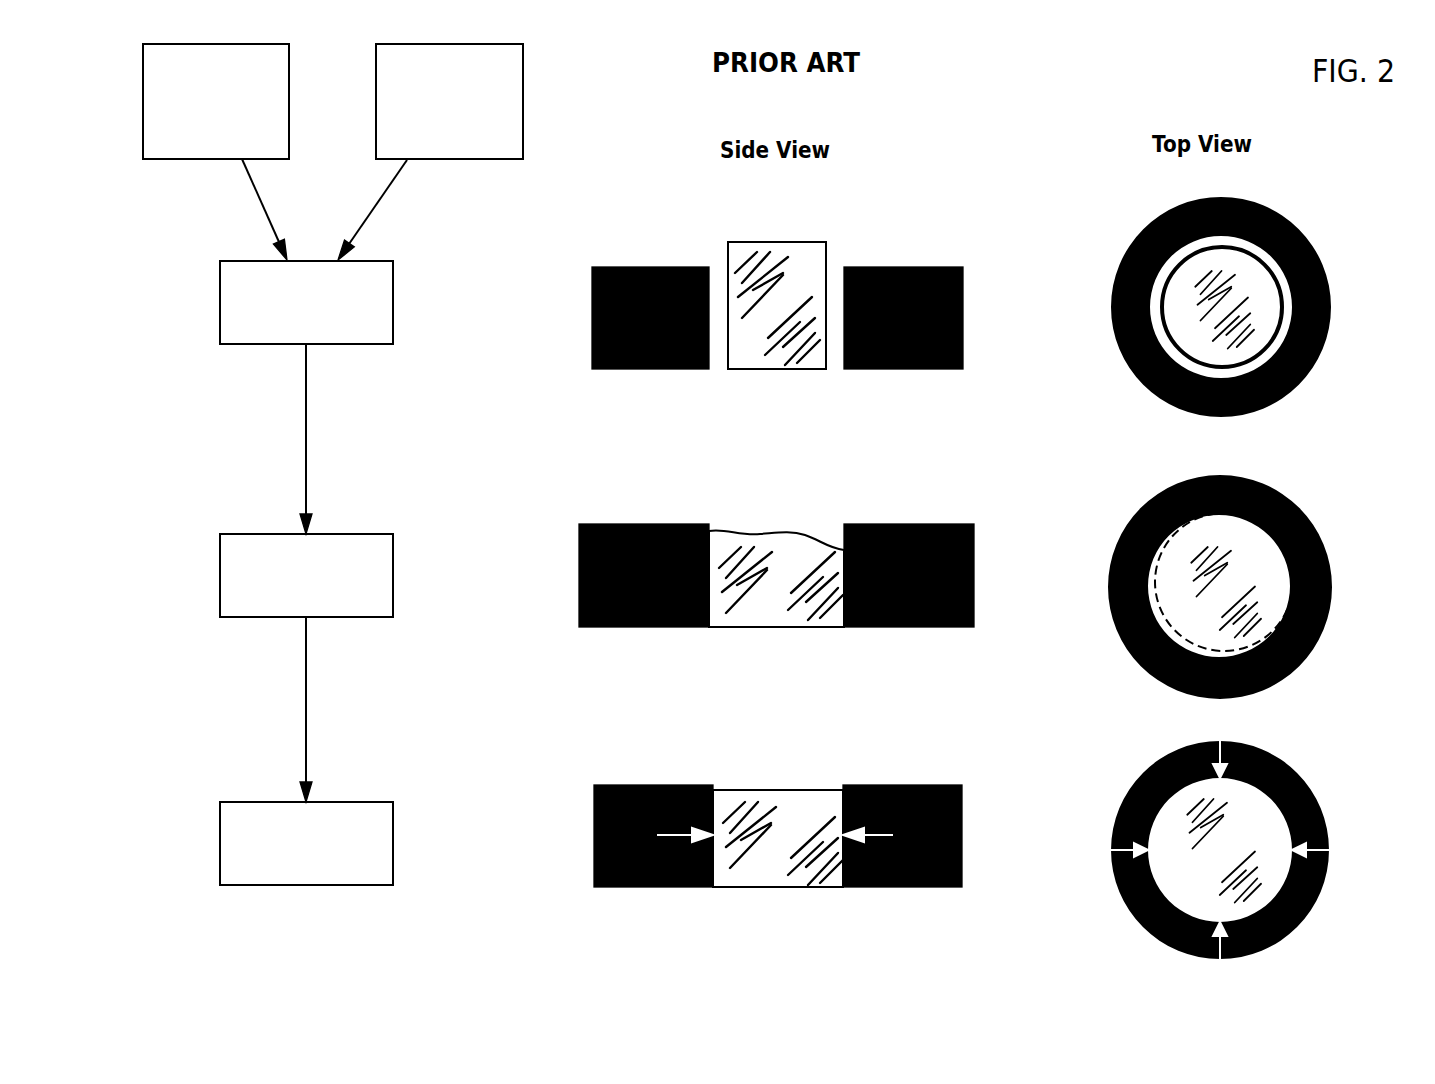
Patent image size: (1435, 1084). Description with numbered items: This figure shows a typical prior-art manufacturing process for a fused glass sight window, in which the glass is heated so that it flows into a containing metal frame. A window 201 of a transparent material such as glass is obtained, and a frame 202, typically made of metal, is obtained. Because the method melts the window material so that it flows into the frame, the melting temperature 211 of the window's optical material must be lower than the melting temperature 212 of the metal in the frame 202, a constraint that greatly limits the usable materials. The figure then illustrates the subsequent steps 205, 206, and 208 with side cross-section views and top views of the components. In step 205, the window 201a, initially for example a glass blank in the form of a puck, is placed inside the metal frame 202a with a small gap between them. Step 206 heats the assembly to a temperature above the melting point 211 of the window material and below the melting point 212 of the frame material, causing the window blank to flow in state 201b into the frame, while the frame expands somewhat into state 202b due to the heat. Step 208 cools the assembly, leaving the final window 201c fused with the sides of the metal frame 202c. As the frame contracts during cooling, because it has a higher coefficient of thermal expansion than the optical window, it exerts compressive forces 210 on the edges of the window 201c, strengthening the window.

The window 201 is at (190, 159).
The frame 202 is at (492, 160).
The assembly step 205 is at (220, 302).
The heating step 206 is at (220, 577).
The cooling step 208 is at (220, 847).
The melting temperature of the window material 211 is at (272, 112).
The melting temperature of the frame metal 212 is at (398, 146).
The window in initial state 201a is at (777, 242).
The metal frame in initial state 202a is at (873, 267).
The window in flowed state 201b is at (742, 530).
The frame in expanded state 202b is at (896, 524).
The final window 201c is at (766, 790).
The metal frame in final state 202c is at (895, 785).
The compressive forces 210 is at (681, 832).